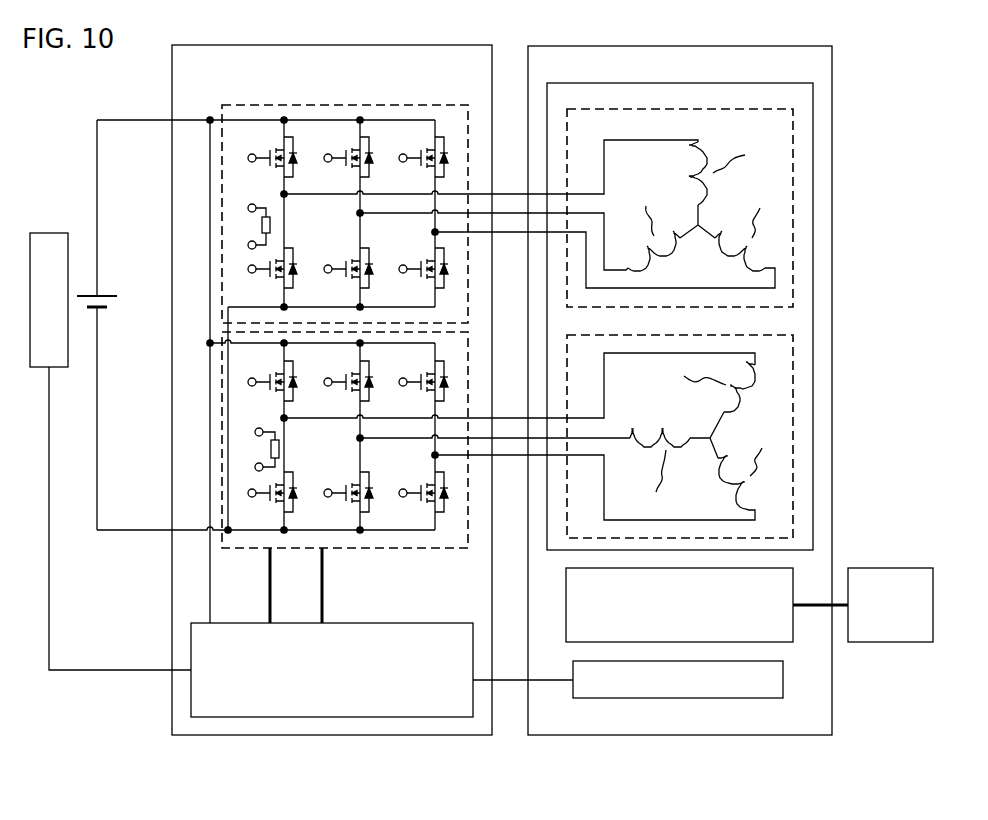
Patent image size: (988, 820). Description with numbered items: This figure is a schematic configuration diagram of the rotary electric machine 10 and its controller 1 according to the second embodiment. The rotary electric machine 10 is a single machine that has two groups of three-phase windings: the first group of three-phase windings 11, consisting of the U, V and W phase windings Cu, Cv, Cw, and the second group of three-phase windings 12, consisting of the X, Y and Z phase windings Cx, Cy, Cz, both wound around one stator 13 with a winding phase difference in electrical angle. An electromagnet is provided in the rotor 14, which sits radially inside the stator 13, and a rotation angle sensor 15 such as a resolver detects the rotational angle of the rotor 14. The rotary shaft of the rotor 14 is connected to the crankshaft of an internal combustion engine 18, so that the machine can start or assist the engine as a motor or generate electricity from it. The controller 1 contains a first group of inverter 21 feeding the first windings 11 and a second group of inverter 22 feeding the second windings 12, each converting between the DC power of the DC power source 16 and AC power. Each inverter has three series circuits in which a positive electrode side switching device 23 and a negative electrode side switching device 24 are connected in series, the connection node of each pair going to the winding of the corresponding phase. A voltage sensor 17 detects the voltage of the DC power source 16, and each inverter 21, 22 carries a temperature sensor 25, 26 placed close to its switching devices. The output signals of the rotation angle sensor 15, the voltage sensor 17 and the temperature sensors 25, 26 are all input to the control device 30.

The controller 1 is at (282, 45).
The rotary electric machine 10 is at (622, 46).
The first group of three-phase windings 11 is at (793, 250).
The second group of three-phase windings 12 is at (793, 428).
The stator 13 is at (793, 162).
The rotor 14 is at (793, 578).
The rotation angle sensor 15 is at (783, 690).
The DC power source 16 is at (106, 290).
The voltage sensor 17 is at (49, 233).
The internal combustion engine 18 is at (889, 643).
The first group of inverter 21 is at (222, 215).
The second group of inverter 22 is at (222, 392).
The positive electrode side switching device 23 is at (348, 276).
The negative electrode side switching device 24 is at (348, 387).
The temperature sensor 25 is at (268, 214).
The temperature sensor 26 is at (274, 438).
The control device 30 is at (191, 650).